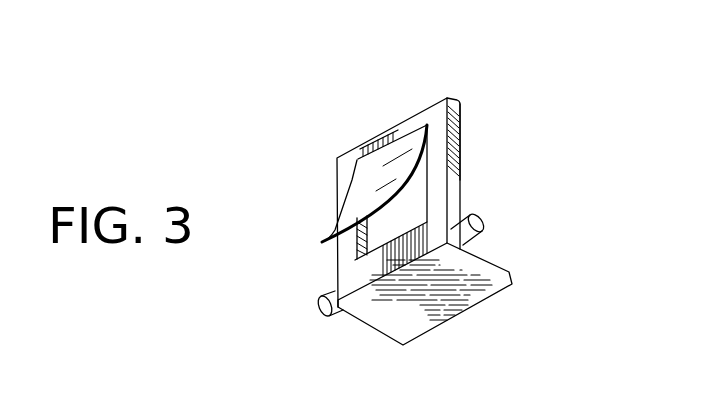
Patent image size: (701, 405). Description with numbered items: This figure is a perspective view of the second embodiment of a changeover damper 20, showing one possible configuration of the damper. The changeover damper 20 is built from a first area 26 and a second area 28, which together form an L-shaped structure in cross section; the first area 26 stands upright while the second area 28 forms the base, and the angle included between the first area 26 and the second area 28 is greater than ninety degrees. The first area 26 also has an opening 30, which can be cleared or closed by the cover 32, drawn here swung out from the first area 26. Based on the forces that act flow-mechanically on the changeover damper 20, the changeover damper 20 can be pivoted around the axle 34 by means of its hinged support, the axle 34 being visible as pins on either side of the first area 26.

The changeover damper 20 is at (422, 202).
The first area 26 is at (345, 267).
The second area 28 is at (461, 294).
The opening 30 is at (456, 177).
The cover 32 is at (365, 192).
The axle 34 is at (320, 315).